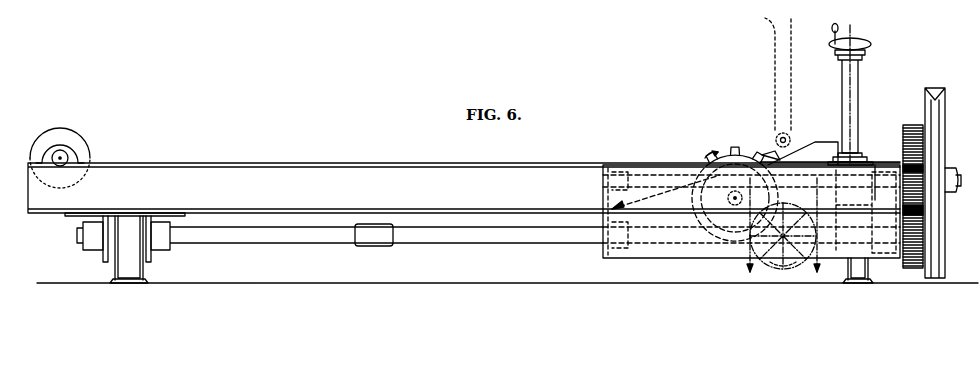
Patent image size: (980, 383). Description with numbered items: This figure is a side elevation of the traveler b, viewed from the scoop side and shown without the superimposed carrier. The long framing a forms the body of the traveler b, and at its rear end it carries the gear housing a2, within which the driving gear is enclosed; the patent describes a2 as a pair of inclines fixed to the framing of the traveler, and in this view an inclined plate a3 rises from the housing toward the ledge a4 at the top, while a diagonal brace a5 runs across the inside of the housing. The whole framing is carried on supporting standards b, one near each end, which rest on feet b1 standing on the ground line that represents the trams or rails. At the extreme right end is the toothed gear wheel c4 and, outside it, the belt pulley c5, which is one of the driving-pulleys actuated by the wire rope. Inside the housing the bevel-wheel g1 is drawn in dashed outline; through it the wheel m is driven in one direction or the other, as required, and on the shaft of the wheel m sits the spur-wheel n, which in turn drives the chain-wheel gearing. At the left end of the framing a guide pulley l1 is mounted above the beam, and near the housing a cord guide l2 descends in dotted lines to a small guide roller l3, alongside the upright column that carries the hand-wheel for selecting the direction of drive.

The main beam / frame a is at (464, 189).
The pair of inclines a2 is at (751, 212).
The inclined plate a3 is at (800, 153).
The housing ledge a4 is at (857, 159).
The diagonal brace a5 is at (666, 192).
The traveler b is at (491, 248).
The foot of standard b1 is at (496, 279).
The gear wheel c4 is at (876, 146).
The belt pulley c5 is at (933, 183).
The bevel-wheel g1 is at (757, 212).
The guide pulley l1 is at (60, 157).
The cord guide l2 is at (778, 74).
The guide roller l3 is at (787, 137).
The wheel m is at (783, 267).
The spur-wheel n is at (772, 261).